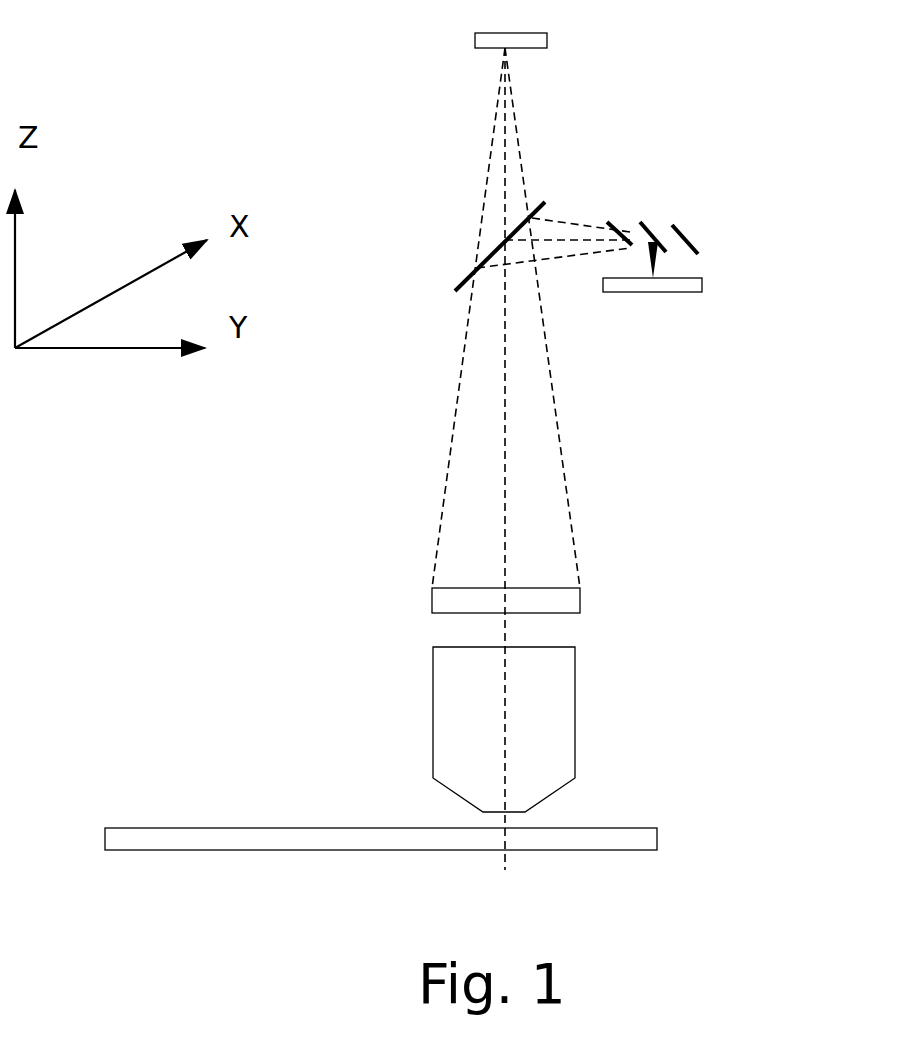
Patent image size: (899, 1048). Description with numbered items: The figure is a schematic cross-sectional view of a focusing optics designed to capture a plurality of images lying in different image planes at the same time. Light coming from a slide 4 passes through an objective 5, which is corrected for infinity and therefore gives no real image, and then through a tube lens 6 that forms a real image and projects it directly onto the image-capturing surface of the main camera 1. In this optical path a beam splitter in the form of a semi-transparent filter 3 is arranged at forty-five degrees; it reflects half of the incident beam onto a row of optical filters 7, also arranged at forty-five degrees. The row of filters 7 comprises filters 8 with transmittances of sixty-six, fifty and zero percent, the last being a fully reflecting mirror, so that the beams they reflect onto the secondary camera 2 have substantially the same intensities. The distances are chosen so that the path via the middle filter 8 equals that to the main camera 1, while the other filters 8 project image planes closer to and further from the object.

The main camera 1 is at (562, 38).
The secondary camera 2 is at (714, 287).
The semi-transparent filter 3 is at (554, 199).
The slide 4 is at (619, 822).
The objective 5 is at (600, 709).
The tube lens 6 is at (592, 602).
The row of optical filters 7 is at (704, 231).
The filters 8 is at (640, 224).